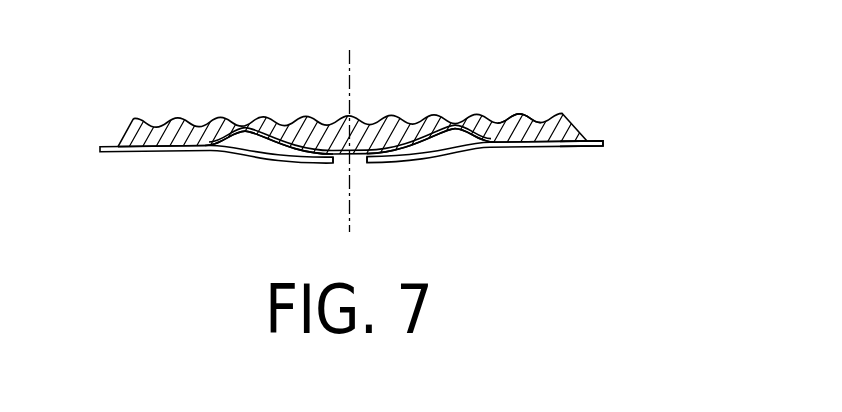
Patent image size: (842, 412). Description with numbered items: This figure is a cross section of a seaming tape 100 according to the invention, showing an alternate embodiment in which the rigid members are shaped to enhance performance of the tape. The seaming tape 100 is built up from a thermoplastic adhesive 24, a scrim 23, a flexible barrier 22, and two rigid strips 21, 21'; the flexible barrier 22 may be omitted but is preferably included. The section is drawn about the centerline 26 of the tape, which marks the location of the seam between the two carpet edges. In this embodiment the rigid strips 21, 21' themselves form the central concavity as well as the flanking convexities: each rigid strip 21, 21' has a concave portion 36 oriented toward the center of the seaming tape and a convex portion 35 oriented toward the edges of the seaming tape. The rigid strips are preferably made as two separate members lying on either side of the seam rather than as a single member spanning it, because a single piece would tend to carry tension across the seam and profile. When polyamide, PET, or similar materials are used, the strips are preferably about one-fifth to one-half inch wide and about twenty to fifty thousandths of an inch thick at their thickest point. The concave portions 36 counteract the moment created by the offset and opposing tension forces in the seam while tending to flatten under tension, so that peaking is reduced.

The seaming tape 100 is at (172, 117).
The rigid strip 21 is at (216, 171).
The rigid strip 21' is at (485, 168).
The flexible barrier 22 is at (645, 142).
The scrim 23 is at (595, 133).
The thermoplastic adhesive 24 is at (515, 114).
The seam centerline 26 is at (352, 58).
The convex portion 35 is at (241, 128).
The concave portion 36 is at (327, 165).